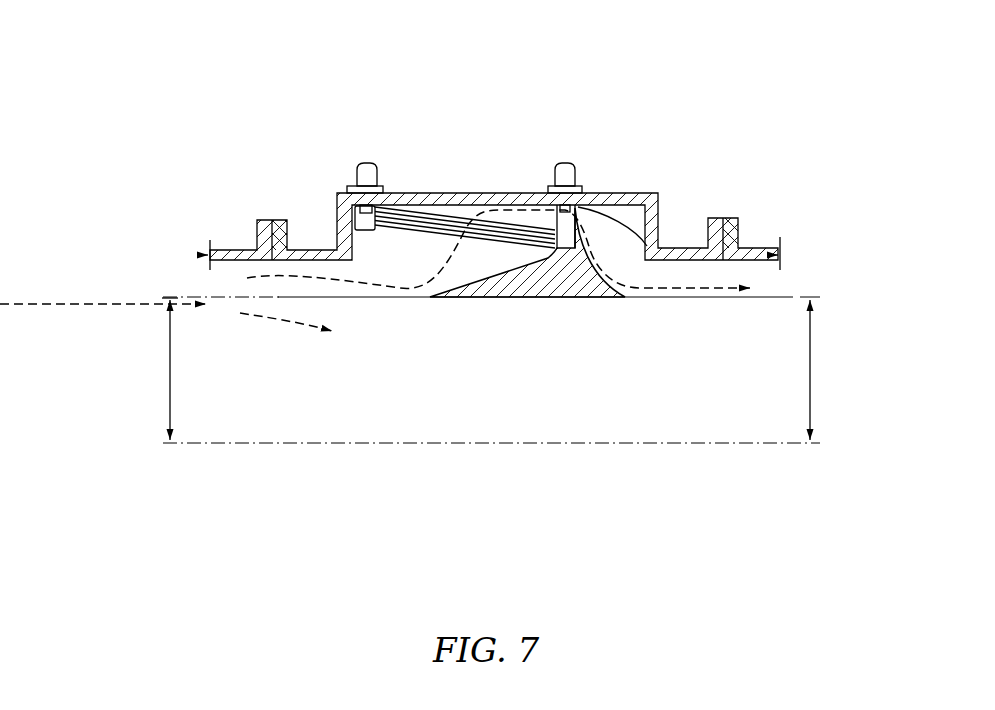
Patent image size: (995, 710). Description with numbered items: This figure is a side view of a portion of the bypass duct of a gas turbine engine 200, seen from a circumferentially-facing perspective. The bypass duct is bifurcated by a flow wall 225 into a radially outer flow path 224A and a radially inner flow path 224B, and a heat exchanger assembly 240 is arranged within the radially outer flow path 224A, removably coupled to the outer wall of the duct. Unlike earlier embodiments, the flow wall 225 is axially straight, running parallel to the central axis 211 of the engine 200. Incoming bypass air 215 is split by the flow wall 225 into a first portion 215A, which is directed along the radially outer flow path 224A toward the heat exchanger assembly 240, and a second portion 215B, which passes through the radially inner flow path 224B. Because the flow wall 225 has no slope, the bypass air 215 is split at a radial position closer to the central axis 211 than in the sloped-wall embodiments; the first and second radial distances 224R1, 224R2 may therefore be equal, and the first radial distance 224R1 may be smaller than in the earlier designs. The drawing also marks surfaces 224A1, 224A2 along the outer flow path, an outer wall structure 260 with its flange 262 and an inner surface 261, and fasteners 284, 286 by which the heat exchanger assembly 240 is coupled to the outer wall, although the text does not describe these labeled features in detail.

The gas turbine engine 200 is at (722, 113).
The central axis 211 is at (255, 447).
The bypass air 215 is at (47, 302).
The first portion of bypass air 215A is at (452, 266).
The second portion of bypass air 215B is at (273, 320).
The radially outer flow path 224A is at (352, 300).
The first flange surface 224A1 is at (300, 248).
The second hub surface portion 224A2 is at (686, 300).
The radially inner flow path 224B is at (210, 383).
The first radial distance 224R1 is at (168, 358).
The second radial distance 224R2 is at (812, 356).
The flow wall 225 is at (420, 300).
The heat exchanger assembly 240 is at (457, 216).
The housing 260 is at (500, 191).
The housing inner surface 261 is at (228, 264).
The housing flange 262 is at (768, 246).
The second fastener 284 is at (583, 184).
The first fastener 286 is at (348, 170).